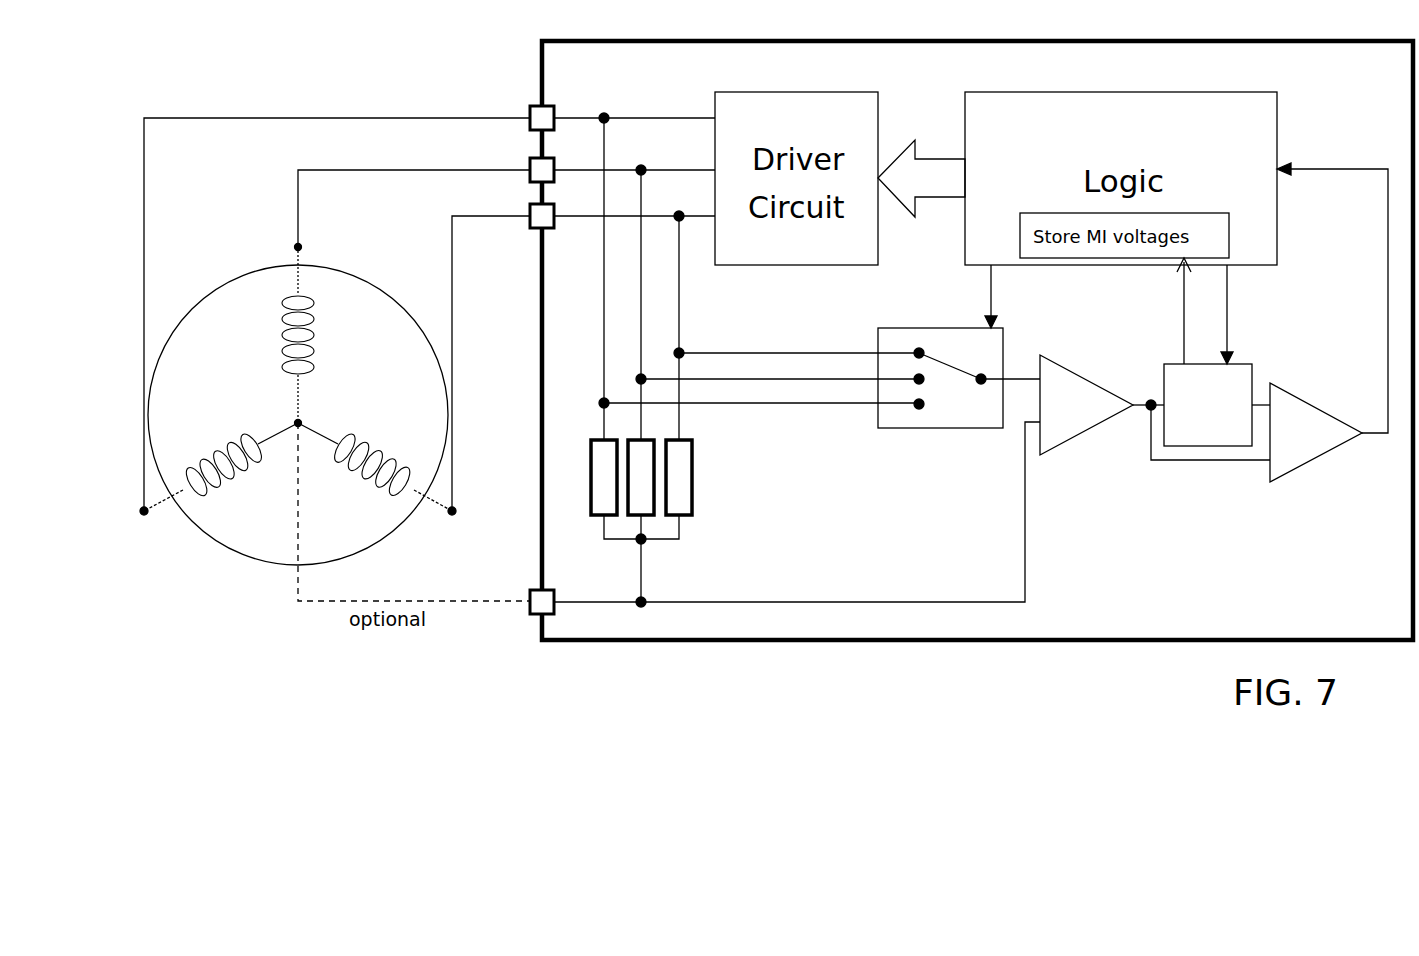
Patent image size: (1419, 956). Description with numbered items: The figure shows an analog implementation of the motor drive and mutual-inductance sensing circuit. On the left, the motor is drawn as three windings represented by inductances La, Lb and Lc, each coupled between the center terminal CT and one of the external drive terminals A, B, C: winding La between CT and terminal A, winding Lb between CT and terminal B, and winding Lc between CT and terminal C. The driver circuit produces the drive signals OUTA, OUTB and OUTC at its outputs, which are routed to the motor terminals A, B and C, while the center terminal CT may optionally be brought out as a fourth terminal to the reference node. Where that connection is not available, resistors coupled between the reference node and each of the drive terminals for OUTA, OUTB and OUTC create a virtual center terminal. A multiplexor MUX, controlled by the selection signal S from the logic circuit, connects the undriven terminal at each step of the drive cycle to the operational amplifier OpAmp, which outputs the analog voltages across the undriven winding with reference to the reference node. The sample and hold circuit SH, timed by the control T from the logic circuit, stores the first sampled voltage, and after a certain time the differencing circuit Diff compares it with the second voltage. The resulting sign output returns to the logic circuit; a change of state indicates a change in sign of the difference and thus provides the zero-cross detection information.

The Out C drive signal OUTC is at (337, 301).
The Out A drive signal OUTA is at (414, 195).
The Out B drive signal OUTB is at (484, 350).
The selection signal S is at (1000, 296).
The sample and hold timing control T is at (1237, 314).
The multiplexor circuit MUX is at (959, 378).
The operational amplifier OpAmp is at (1086, 405).
The sample and hold circuit SH is at (1208, 405).
The differencing circuit Diff is at (1316, 432).
The sign output sign is at (1332, 298).
The external drive terminal A is at (309, 248).
The external drive terminal B is at (447, 501).
The external drive terminal C is at (145, 501).
The center terminal CT is at (279, 411).
The motor winding inductance La is at (313, 335).
The motor winding inductance Lb is at (372, 447).
The motor winding inductance Lc is at (223, 447).